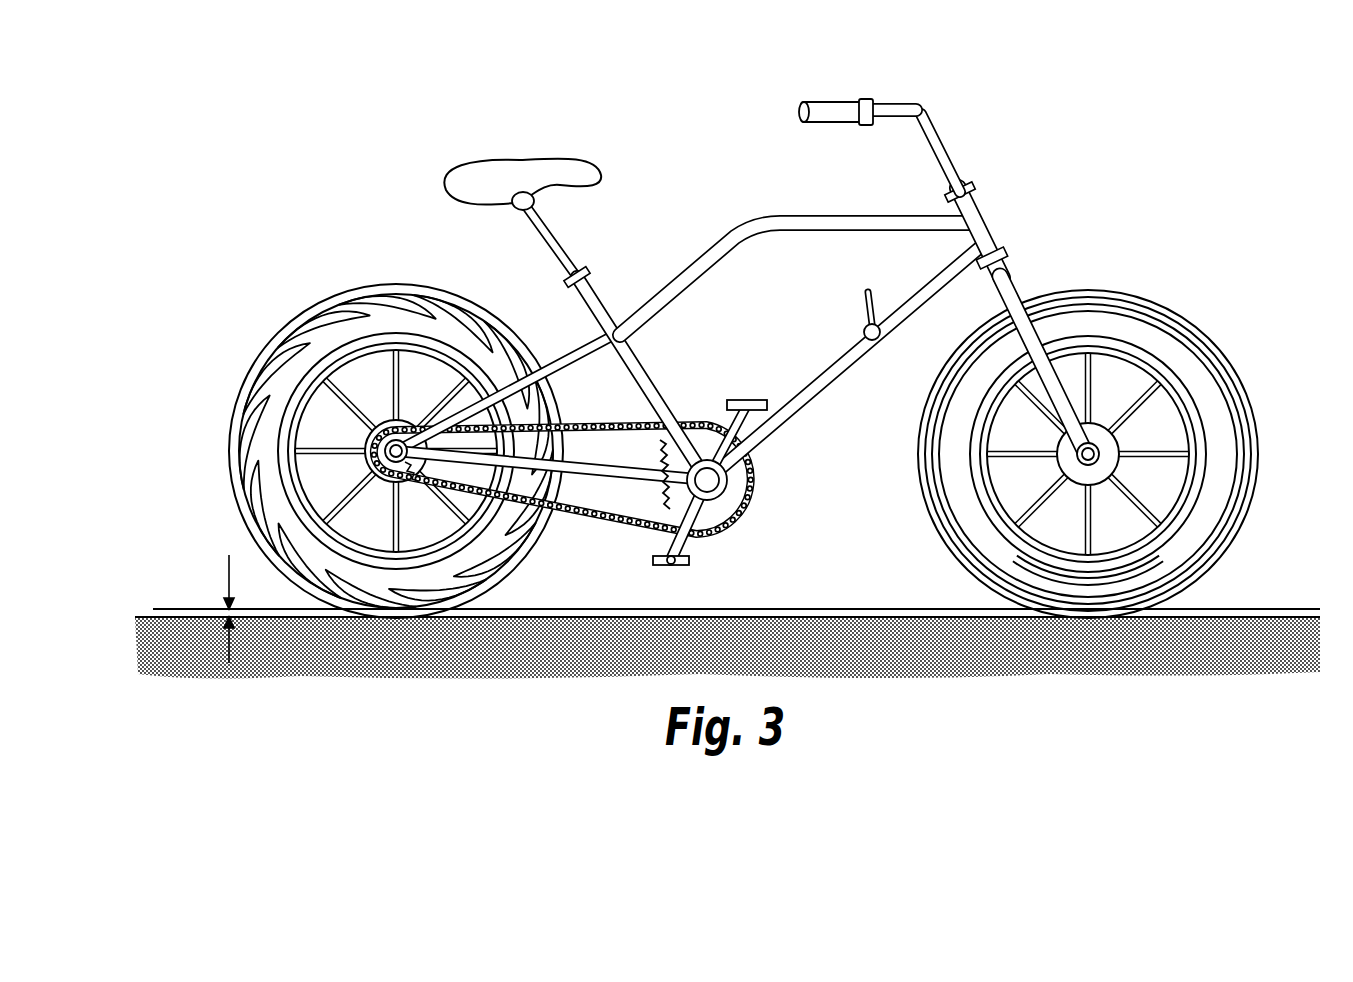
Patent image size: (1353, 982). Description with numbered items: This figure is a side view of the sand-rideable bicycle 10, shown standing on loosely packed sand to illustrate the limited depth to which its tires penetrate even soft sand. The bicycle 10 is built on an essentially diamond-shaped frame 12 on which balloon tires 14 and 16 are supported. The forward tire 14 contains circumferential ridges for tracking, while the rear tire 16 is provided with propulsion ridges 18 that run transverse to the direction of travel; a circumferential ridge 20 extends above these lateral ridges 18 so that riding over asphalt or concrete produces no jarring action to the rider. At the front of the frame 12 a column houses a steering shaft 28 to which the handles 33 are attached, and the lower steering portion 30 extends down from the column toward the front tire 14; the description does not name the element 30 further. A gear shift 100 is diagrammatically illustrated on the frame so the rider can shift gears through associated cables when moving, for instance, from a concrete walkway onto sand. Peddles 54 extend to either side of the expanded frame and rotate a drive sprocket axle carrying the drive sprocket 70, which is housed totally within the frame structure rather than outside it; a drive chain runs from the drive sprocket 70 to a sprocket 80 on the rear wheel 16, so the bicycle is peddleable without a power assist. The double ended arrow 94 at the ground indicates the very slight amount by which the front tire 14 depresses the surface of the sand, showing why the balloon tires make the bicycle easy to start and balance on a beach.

The sand-rideable bicycle 10 is at (721, 341).
The frame 12 is at (712, 232).
The forward tire 14 is at (1180, 318).
The rear tire 16 is at (373, 432).
The propulsion ridges 18 is at (369, 451).
The circumferential ridge 20 is at (325, 297).
The steering shaft 28 is at (945, 165).
The fork 30 is at (1003, 300).
The handles 33 is at (892, 108).
The peddles 54 is at (768, 400).
The drive sprocket 70 is at (740, 490).
The sprocket 80 is at (381, 472).
The double ended arrow 94 is at (228, 645).
The gear shift 100 is at (855, 318).